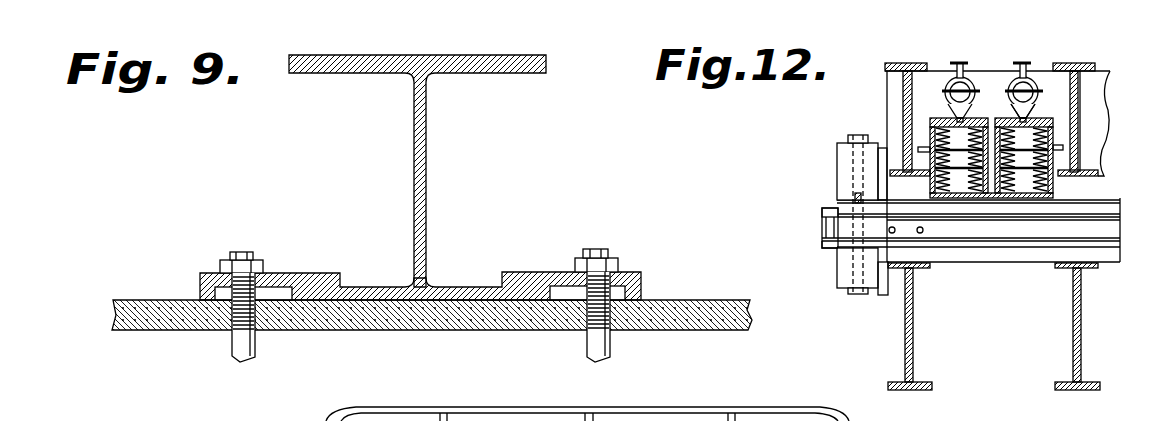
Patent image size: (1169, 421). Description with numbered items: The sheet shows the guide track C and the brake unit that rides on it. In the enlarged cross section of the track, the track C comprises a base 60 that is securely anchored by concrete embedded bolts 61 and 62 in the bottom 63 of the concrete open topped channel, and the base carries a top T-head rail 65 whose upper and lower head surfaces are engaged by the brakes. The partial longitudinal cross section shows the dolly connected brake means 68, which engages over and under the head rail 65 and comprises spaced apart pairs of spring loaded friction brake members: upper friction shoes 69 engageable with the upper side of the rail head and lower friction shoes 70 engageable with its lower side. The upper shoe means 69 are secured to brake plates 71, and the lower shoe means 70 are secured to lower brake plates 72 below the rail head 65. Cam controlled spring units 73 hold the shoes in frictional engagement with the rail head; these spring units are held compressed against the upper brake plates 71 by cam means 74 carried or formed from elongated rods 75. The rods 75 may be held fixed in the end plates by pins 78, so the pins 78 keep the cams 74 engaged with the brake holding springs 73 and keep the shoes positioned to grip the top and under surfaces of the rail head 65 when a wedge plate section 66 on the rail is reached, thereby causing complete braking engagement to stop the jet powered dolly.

In FIG. 9, the base 60 is at (453, 286).
In FIG. 12, the base 60 is at (832, 250).
In FIG. 9, the concrete embedded bolt 61 is at (233, 350).
In FIG. 9, the concrete embedded bolt 62 is at (612, 336).
In FIG. 9, the bottom of concrete channel 63 is at (668, 298).
In FIG. 9, the T-head rail 65 is at (462, 63).
In FIG. 12, the T-head rail 65 is at (822, 210).
In FIG. 12, the brake actuating wedge plate 66 is at (836, 206).
In FIG. 12, the brake means 68 is at (1148, 89).
In FIG. 12, the upper friction shoe 69 is at (1120, 213).
In FIG. 12, the lower friction shoe 70 is at (1120, 240).
In FIG. 12, the brake plate 71 is at (1120, 198).
In FIG. 12, the lower brake plate 72 is at (1110, 265).
In FIG. 12, the cam controlled spring unit 73 is at (1060, 137).
In FIG. 12, the cam means 74 is at (1012, 113).
In FIG. 12, the elongated rod 75 is at (958, 77).
In FIG. 12, the pin 78 is at (960, 65).
In FIG. 12, the guide track C is at (973, 238).